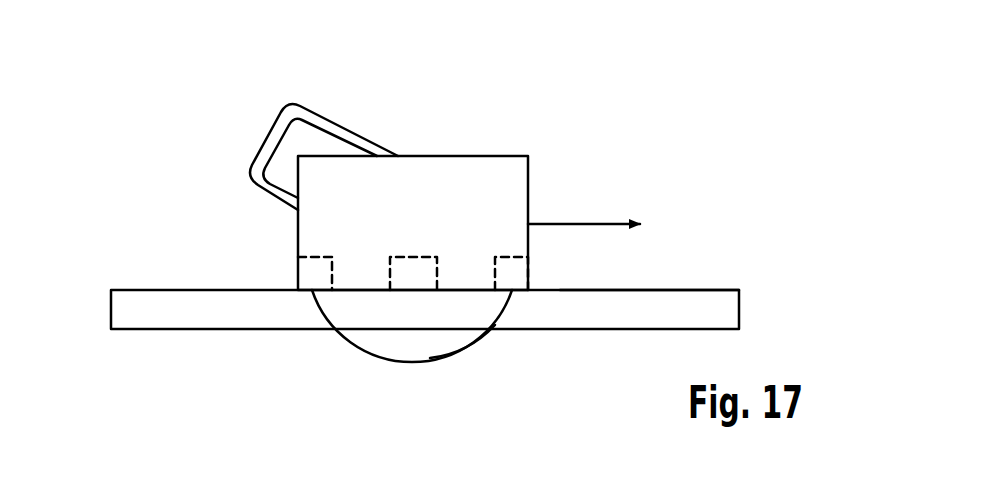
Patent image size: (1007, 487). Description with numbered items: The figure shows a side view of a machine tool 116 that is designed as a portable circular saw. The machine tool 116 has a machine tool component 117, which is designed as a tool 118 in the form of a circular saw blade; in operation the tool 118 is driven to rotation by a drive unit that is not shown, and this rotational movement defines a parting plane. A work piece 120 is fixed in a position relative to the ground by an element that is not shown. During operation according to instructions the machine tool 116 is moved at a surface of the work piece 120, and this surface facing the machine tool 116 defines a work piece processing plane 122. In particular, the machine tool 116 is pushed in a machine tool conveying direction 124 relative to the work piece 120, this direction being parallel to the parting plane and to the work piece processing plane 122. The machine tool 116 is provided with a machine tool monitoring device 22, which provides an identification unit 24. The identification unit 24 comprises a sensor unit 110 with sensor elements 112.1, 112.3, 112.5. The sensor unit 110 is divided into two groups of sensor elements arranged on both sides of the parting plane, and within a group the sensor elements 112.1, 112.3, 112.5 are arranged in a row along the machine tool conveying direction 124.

The machine tool monitoring device 22 is at (270, 257).
The identification unit 24 is at (421, 249).
The sensor unit 110 is at (328, 249).
The sensor element 112.1 is at (520, 283).
The sensor element 112.3 is at (410, 283).
The sensor element 112.5 is at (310, 283).
The machine tool 116 is at (554, 127).
The machine tool component 117 is at (463, 355).
The tool 118 is at (372, 342).
The work piece 120 is at (725, 313).
The work piece processing plane 122 is at (678, 288).
The machine tool conveying direction 124 is at (577, 221).